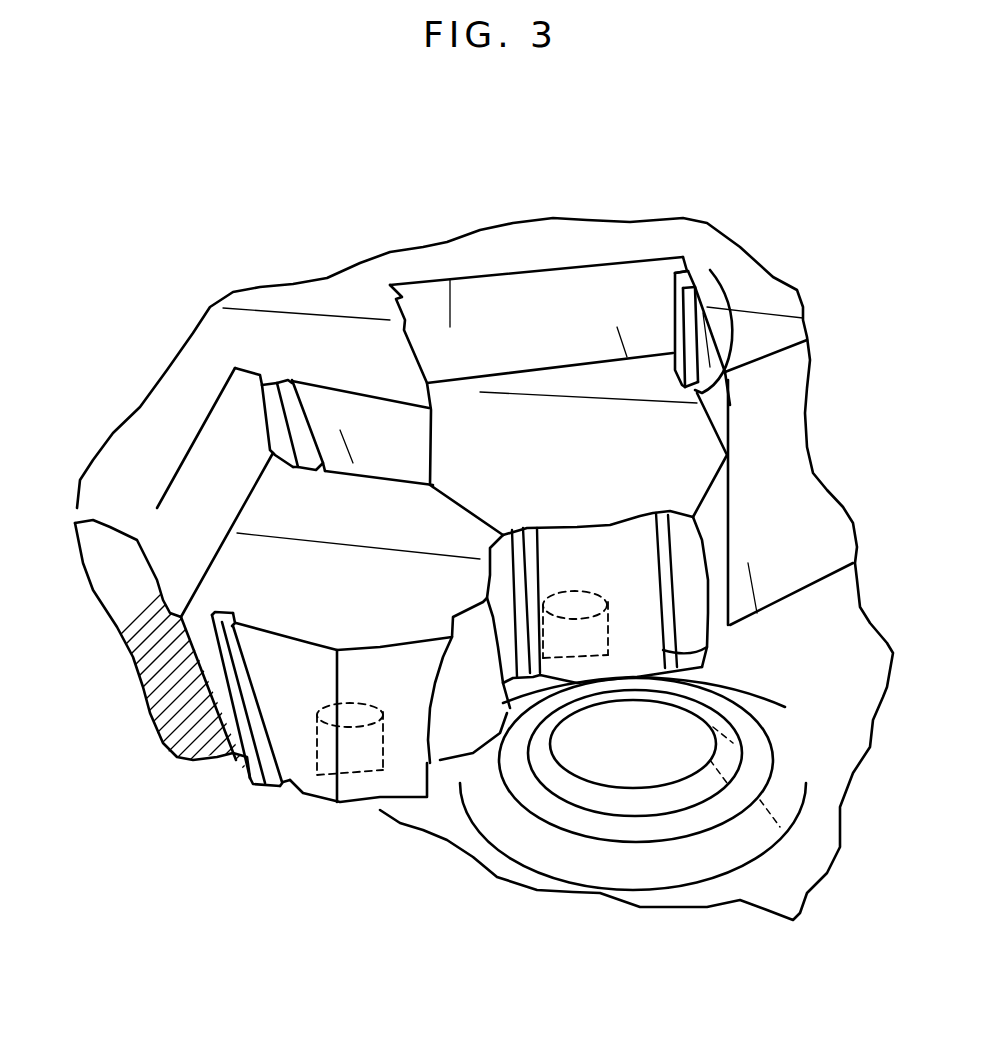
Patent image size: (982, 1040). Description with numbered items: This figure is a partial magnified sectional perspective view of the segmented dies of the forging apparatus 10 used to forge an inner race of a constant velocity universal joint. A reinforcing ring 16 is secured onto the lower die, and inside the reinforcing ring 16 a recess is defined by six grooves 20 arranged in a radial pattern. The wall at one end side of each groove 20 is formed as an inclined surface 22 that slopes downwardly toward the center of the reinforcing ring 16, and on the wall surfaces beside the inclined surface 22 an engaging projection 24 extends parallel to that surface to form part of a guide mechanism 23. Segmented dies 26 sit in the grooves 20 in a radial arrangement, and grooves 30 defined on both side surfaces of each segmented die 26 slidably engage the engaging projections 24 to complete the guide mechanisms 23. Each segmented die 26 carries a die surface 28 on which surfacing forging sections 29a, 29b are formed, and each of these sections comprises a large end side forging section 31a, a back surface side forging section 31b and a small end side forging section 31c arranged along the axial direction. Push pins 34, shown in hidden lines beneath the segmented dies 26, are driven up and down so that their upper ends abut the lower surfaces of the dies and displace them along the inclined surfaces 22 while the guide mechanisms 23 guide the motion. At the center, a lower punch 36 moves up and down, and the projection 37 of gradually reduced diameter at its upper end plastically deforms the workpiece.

The forging apparatus 10 is at (767, 116).
The reinforcing ring 16 is at (743, 277).
The grooves 20 is at (423, 367).
The inclined surface 22 is at (567, 287).
The guide mechanism 23 is at (353, 224).
The engaging projection 24 is at (277, 407).
The segmented dies 26 is at (597, 377).
The die surface 28 is at (620, 557).
The surfacing forging section 29a is at (483, 552).
The surfacing forging section 29b is at (667, 460).
The grooves 30 is at (310, 467).
The large end side forging section 31a is at (583, 583).
The back surface side forging section 31b is at (528, 597).
The small end side forging section 31c is at (532, 537).
The push pins 34 is at (313, 778).
The lower punch 36 is at (595, 793).
The projection 37 is at (633, 744).